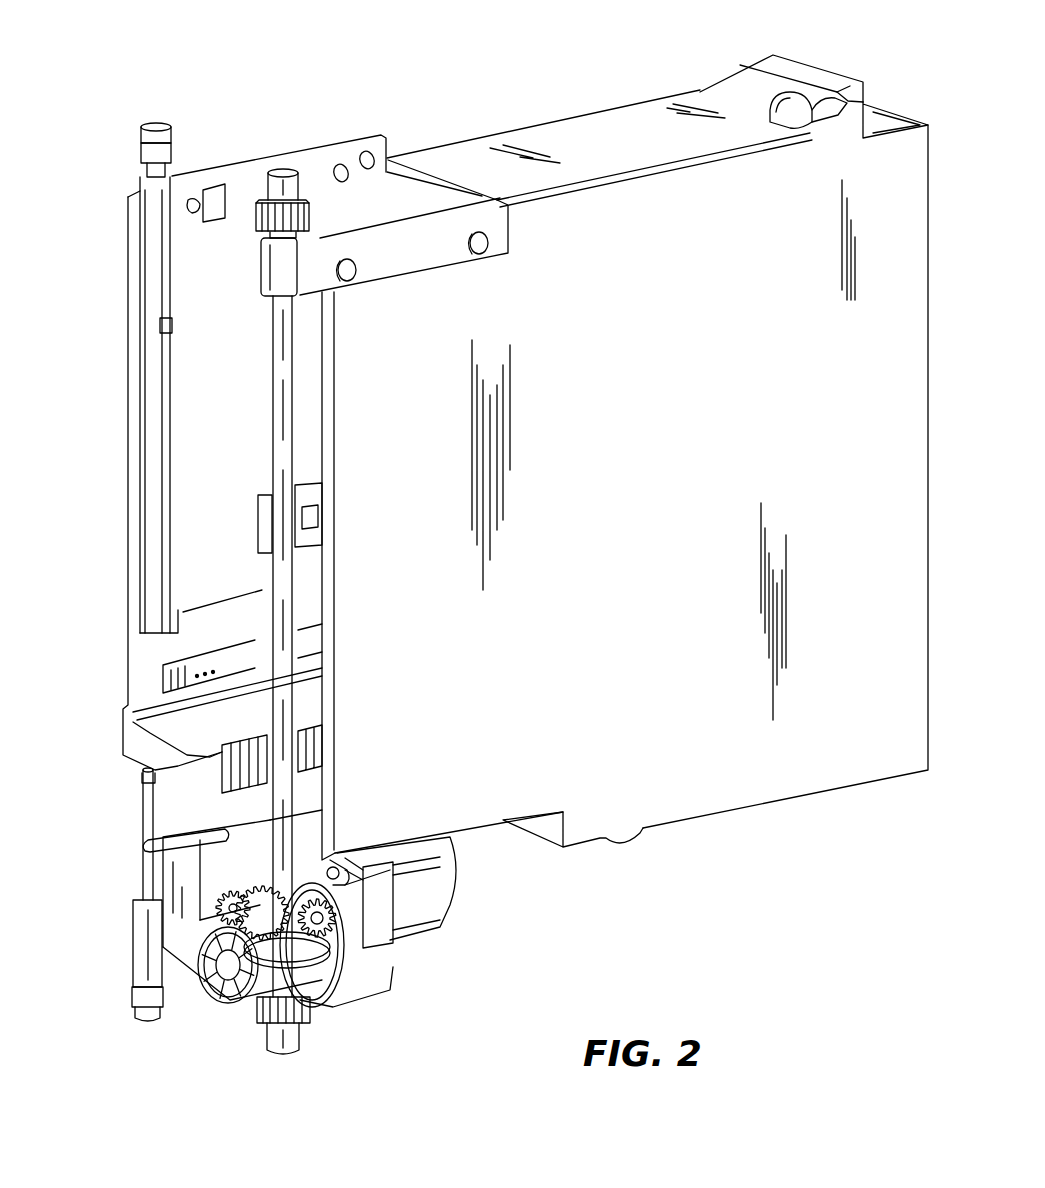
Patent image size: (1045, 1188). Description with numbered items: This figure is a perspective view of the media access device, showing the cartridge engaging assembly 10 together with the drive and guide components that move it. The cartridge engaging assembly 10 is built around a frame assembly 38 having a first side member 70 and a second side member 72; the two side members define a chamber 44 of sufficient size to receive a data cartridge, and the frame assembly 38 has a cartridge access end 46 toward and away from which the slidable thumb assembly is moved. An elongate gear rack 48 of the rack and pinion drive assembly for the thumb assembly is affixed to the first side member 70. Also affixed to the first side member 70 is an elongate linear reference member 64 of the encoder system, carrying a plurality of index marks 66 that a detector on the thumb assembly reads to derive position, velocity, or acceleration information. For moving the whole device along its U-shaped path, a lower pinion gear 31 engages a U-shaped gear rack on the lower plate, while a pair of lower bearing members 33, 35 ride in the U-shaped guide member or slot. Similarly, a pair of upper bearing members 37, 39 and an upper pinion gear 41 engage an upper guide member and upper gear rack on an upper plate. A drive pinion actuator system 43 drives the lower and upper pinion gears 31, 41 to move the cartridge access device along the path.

The cartridge engaging assembly 10 is at (265, 52).
The lower pinion gear 31 is at (250, 1017).
The lower bearing member 33 is at (130, 990).
The lower bearing member 35 is at (303, 1040).
The upper bearing member 37 is at (138, 182).
The frame assembly 38 is at (812, 62).
The upper bearing member 39 is at (262, 187).
The upper pinion gear 41 is at (255, 217).
The drive pinion actuator system 43 is at (462, 905).
The chamber 44 is at (204, 380).
The cartridge access end 46 is at (130, 510).
The elongate gear rack 48 is at (247, 780).
The elongate linear reference member 64 is at (258, 645).
The index marks 66 is at (165, 678).
The first side member 70 is at (518, 125).
The second side member 72 is at (652, 486).